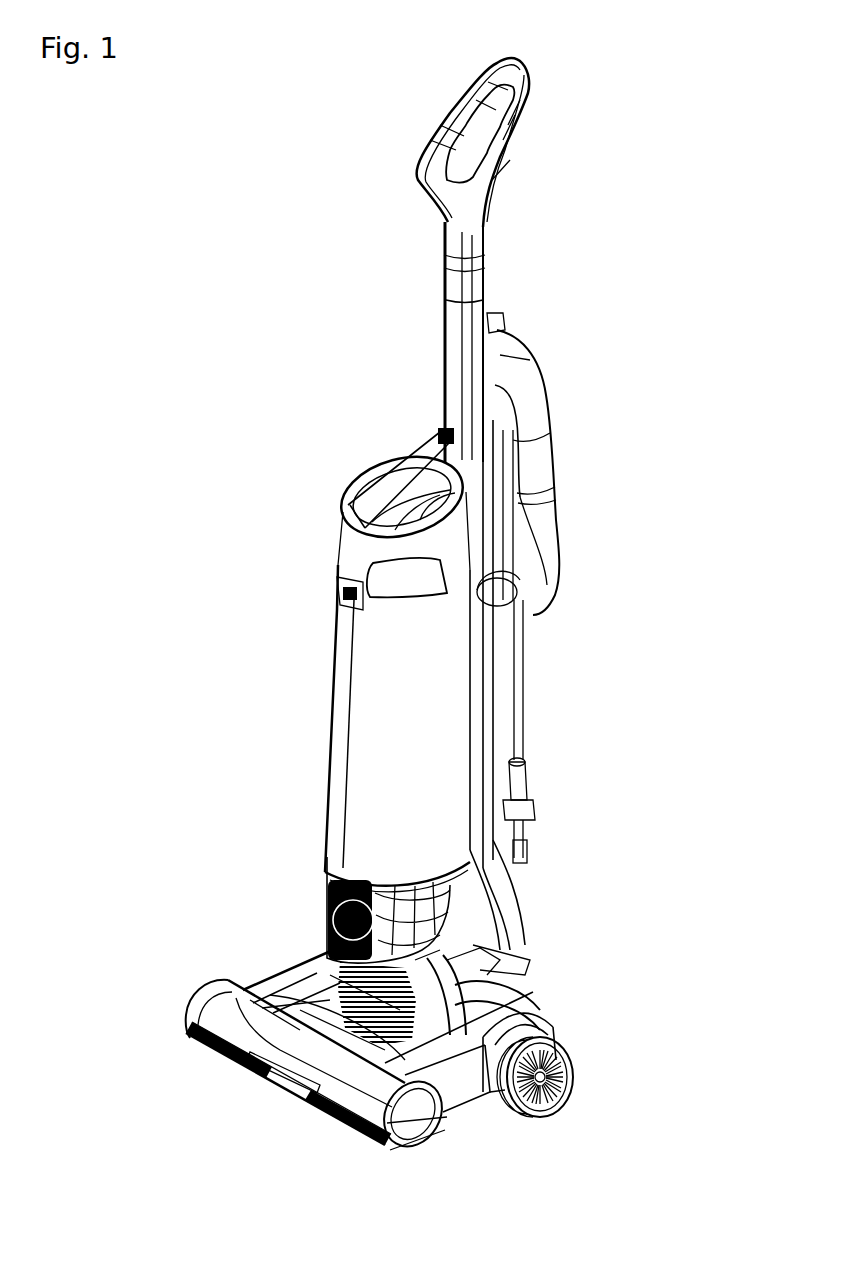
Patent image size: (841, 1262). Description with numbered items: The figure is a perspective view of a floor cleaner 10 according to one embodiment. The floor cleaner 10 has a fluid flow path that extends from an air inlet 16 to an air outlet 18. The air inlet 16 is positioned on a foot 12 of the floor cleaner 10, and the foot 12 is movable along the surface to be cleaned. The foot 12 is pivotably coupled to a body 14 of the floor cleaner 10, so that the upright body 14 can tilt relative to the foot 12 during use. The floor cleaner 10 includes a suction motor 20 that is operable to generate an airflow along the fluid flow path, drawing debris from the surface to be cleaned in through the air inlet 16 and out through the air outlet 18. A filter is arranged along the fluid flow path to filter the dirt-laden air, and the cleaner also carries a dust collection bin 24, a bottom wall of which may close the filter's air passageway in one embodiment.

The floor cleaner 10 is at (205, 443).
The foot 12 is at (308, 1012).
The body 14 is at (480, 710).
The air inlet 16 is at (283, 1097).
The air outlet 18 is at (437, 966).
The suction motor 20 is at (465, 993).
The dust collection bin 24 is at (377, 812).